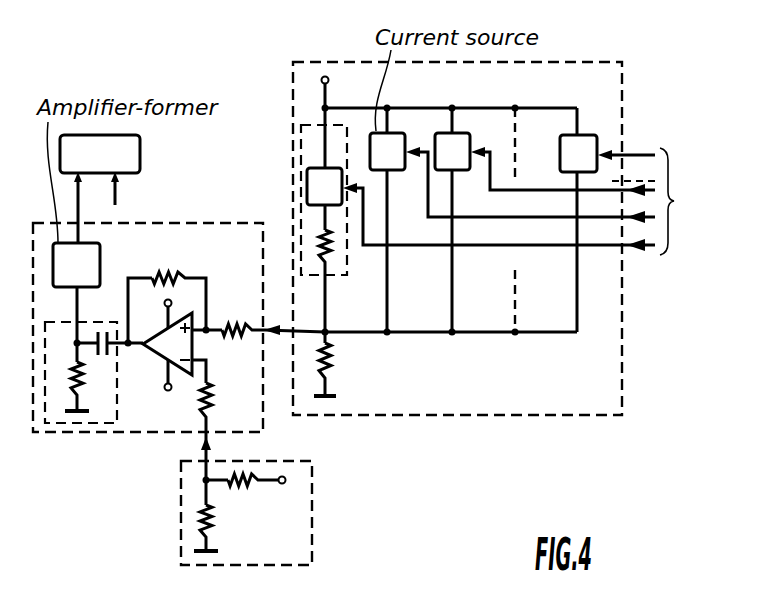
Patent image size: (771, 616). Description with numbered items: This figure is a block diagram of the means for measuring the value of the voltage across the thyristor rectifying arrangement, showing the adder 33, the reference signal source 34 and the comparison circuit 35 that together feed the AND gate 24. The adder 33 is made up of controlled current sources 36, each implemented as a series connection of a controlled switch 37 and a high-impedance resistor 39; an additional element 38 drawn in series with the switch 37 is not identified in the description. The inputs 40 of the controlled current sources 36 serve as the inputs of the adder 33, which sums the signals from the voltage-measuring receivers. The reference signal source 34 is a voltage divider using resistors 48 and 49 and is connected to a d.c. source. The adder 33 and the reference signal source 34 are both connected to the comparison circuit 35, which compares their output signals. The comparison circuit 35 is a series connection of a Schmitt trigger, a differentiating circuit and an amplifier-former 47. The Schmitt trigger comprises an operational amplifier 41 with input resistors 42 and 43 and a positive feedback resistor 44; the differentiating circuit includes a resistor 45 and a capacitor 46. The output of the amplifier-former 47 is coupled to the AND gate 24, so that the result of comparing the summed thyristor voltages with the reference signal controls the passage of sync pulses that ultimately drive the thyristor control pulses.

The AND gate 24 is at (100, 189).
The adder 33 is at (311, 56).
The reference signal source 34 is at (313, 557).
The comparison circuit 35 is at (193, 219).
The controlled current source 36 is at (277, 203).
The controlled switch 37 is at (325, 186).
The resistor 38 is at (330, 262).
The high-impedance resistor 39 is at (332, 362).
The input 40 is at (410, 150).
The operational amplifier 41 is at (156, 347).
The input resistor 42 is at (233, 324).
The input resistor 43 is at (212, 404).
The positive feedback resistor 44 is at (165, 273).
The resistor 45 is at (80, 378).
The capacitor 46 is at (109, 350).
The amplifier-former 47 is at (76, 265).
The resistor 48 is at (212, 533).
The resistor 49 is at (255, 483).